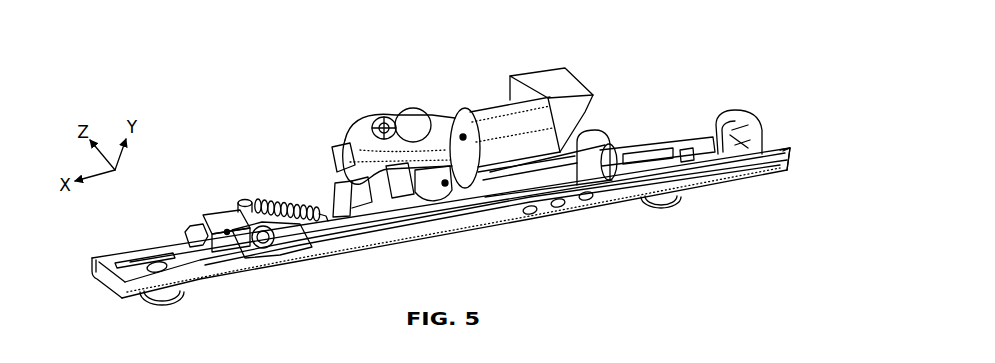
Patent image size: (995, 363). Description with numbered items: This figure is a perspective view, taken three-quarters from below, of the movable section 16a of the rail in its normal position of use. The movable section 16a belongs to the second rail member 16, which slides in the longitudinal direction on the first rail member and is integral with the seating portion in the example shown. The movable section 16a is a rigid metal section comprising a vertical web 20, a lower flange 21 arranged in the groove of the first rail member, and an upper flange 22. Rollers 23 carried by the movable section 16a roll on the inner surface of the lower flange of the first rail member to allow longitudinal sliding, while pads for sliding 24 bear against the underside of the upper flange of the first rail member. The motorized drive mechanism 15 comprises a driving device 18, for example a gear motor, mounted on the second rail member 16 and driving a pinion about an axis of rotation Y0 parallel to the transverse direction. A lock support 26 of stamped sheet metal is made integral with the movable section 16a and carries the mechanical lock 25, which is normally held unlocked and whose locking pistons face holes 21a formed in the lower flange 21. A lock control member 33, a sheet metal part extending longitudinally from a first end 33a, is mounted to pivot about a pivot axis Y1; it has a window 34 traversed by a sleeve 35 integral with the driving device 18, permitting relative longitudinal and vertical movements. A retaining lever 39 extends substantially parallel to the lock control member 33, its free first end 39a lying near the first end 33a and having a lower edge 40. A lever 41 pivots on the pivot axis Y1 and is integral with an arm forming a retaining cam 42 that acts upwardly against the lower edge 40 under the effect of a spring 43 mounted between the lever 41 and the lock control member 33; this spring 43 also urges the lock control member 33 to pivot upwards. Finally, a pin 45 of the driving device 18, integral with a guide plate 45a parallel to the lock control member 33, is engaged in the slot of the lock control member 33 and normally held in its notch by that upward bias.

The motorized drive mechanism 15 is at (440, 108).
The second rail member 16 is at (765, 112).
The movable section 16a is at (796, 143).
The driving device 18 is at (495, 107).
The vertical web 20 is at (110, 283).
The lower flange 21 is at (233, 267).
The hole 21a is at (585, 200).
The upper flange 22 is at (88, 262).
The rollers 23 is at (177, 302).
The pads for sliding 24 is at (192, 230).
The mechanical lock 25 is at (598, 128).
The lock support 26 is at (616, 146).
The lock control member 33 is at (399, 197).
The first end 33a is at (287, 239).
The window 34 is at (338, 214).
The sleeve 35 is at (361, 212).
The retaining lever 39 is at (213, 210).
The first end 39a is at (213, 223).
The lower edge 40 is at (227, 234).
The lever 41 is at (242, 200).
The retaining cam 42 is at (259, 249).
The spring 43 is at (270, 212).
The pin 45 is at (447, 198).
The guide plate 45a is at (441, 187).
The axis of rotation Y0 is at (393, 113).
The pivot axis Y1 is at (272, 215).